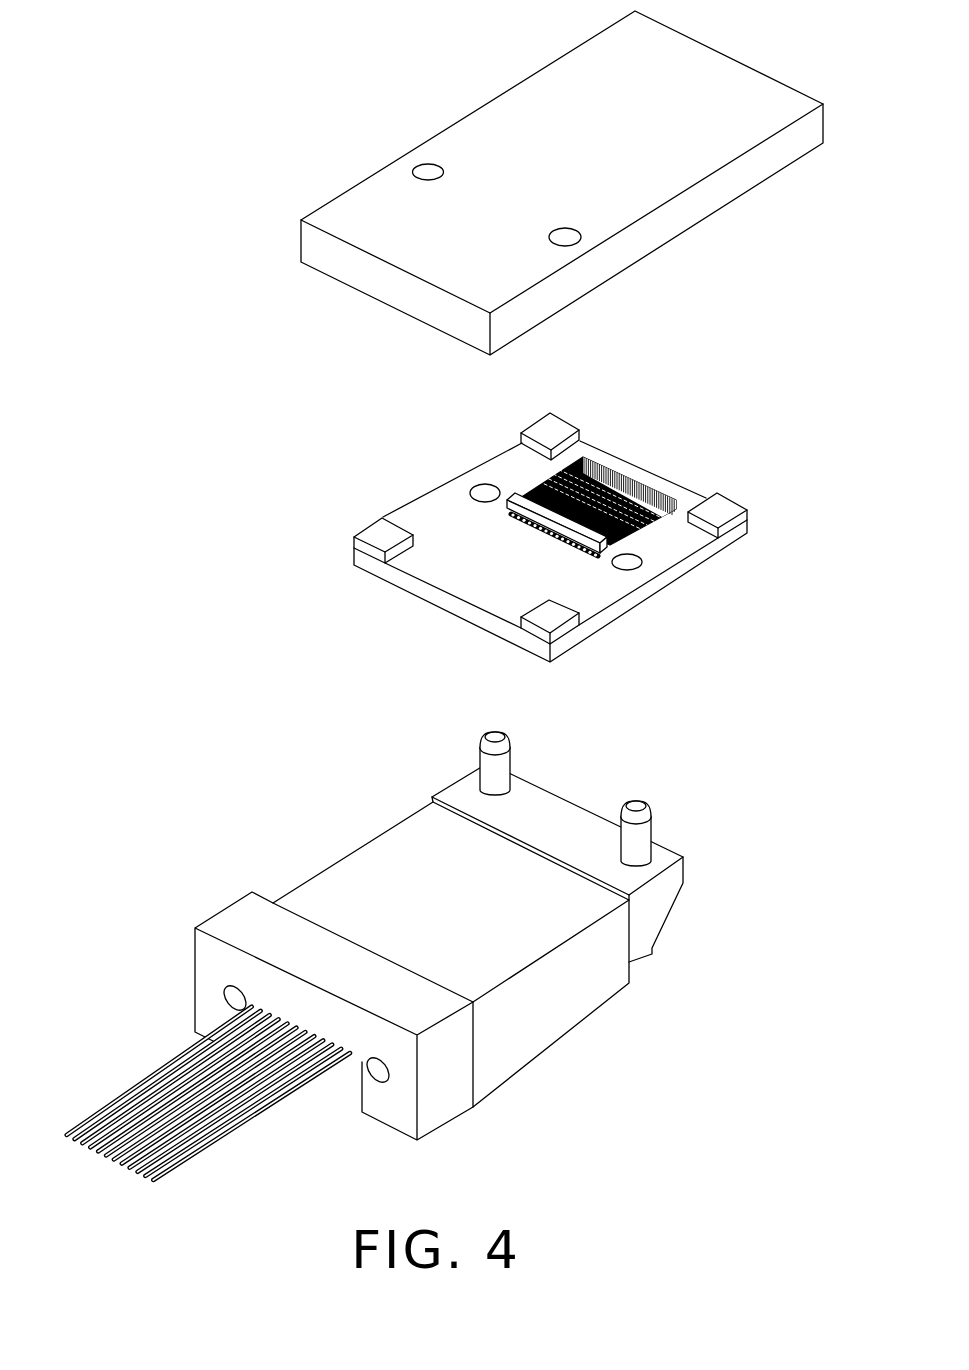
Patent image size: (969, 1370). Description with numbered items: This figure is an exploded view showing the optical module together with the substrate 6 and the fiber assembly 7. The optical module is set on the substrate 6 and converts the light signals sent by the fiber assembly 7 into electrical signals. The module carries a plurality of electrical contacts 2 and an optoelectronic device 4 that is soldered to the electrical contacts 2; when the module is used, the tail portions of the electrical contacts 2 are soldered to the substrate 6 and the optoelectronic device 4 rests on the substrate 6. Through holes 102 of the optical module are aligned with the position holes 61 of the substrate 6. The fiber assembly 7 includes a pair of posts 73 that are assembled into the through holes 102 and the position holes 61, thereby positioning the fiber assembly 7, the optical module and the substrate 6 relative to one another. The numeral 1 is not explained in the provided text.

The circuit board 1 is at (690, 542).
The through hole 102 is at (628, 568).
The electrical contacts 2 is at (658, 492).
The optoelectronic device 4 is at (585, 533).
The substrate 6 is at (449, 83).
The position hole 61 is at (428, 172).
The fiber assembly 7 is at (560, 990).
The post 73 is at (639, 835).